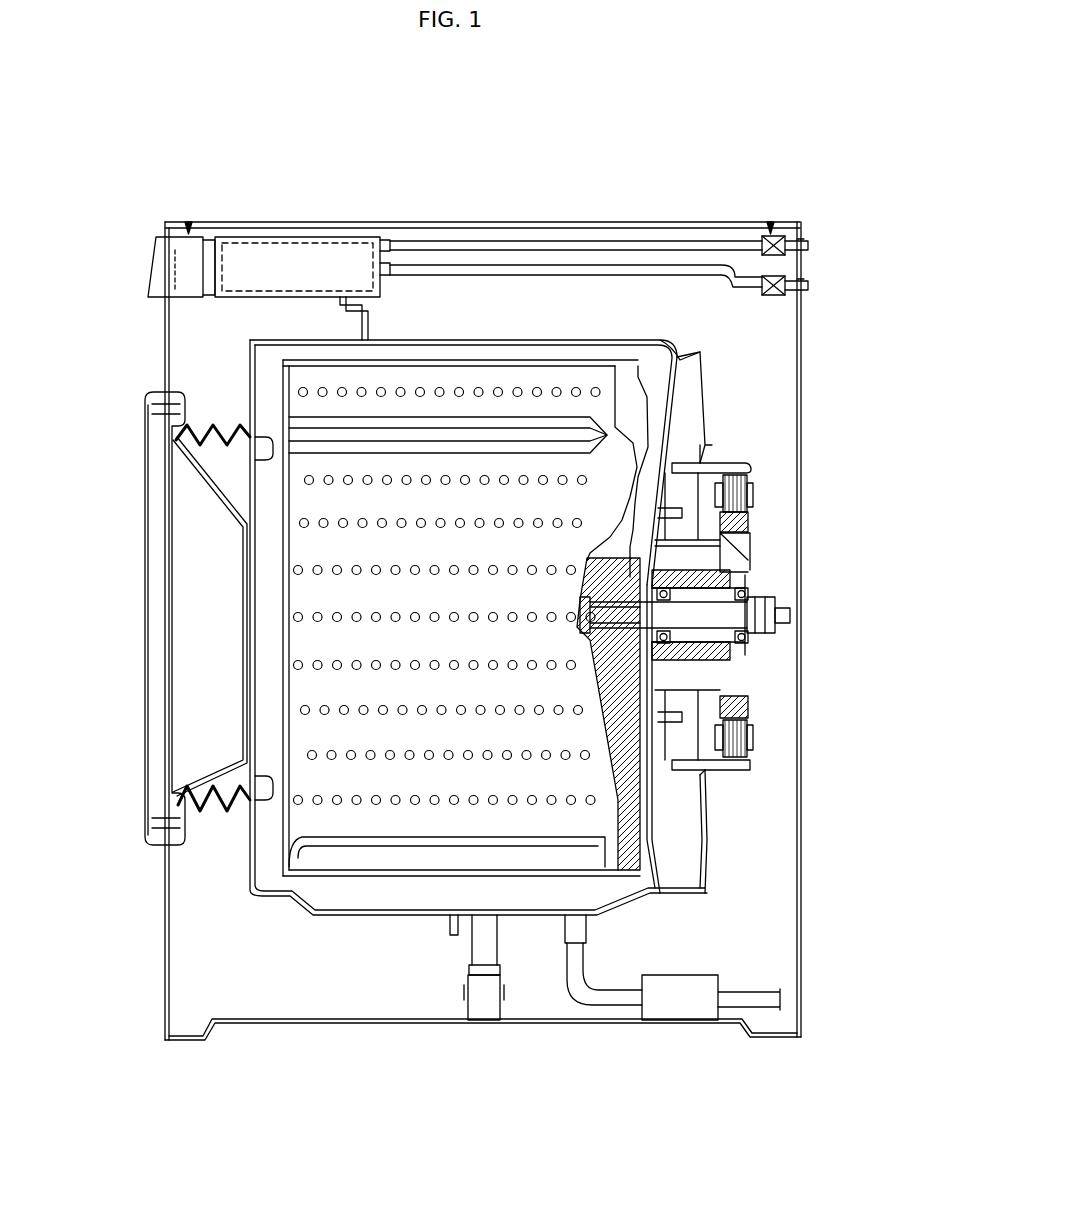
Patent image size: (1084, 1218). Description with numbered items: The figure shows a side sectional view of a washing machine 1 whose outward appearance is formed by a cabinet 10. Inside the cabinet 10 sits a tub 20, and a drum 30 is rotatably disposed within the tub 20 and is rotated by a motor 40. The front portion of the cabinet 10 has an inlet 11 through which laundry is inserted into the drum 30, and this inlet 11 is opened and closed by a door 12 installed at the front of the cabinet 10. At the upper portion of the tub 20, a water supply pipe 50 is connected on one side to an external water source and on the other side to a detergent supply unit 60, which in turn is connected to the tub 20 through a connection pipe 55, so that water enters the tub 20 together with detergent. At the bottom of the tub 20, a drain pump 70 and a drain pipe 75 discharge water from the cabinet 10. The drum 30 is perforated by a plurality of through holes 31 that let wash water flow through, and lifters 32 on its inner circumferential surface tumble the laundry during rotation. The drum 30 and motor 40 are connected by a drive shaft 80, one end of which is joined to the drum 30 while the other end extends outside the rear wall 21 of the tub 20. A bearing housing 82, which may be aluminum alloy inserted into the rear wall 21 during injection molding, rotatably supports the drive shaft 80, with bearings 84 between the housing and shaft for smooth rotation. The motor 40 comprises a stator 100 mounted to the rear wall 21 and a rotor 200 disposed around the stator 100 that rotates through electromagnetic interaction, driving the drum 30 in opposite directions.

The washing machine 1 is at (470, 136).
The cabinet 10 is at (150, 340).
The inlet 11 is at (224, 446).
The door 12 is at (150, 628).
The tub 20 is at (553, 550).
The rear wall 21 is at (680, 424).
The drum 30 is at (465, 579).
The through holes 31 is at (492, 567).
The lifters 32 is at (415, 447).
The motor 40 is at (786, 610).
The water supply pipe 50 is at (656, 275).
The connection pipe 55 is at (372, 310).
The detergent supply unit 60 is at (318, 250).
The drain pump 70 is at (705, 982).
The drain pipe 75 is at (586, 946).
The drive shaft 80 is at (722, 620).
The bearing housing 82 is at (720, 678).
The bearings 84 is at (690, 658).
The stator 100 is at (750, 490).
The rotor 200 is at (750, 524).